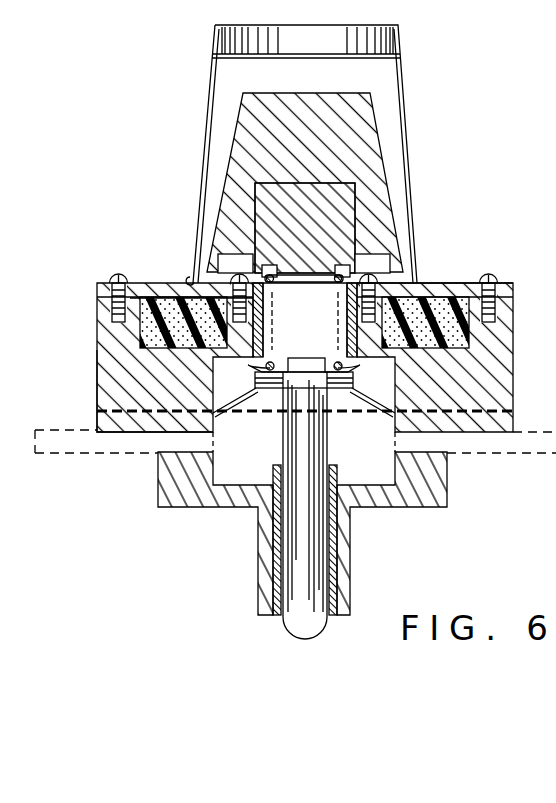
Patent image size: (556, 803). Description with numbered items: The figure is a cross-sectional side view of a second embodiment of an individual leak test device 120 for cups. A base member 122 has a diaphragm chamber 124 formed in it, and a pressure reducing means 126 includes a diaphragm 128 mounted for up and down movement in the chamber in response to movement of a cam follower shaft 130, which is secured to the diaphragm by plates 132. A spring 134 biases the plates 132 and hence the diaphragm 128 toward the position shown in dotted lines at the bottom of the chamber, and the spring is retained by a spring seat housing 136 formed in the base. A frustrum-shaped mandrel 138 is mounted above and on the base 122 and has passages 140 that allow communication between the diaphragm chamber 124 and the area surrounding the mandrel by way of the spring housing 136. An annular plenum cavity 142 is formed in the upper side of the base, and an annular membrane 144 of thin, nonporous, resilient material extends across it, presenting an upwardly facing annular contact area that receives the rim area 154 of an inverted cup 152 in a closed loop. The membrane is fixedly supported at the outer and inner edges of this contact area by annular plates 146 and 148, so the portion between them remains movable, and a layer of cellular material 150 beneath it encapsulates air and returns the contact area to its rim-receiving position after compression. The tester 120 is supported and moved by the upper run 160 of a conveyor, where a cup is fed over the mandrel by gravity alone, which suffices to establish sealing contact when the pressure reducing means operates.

The leak test device 120 is at (127, 172).
The base member 122 is at (97, 341).
The diaphragm chamber 124 is at (97, 362).
The pressure reducing means 126 is at (227, 528).
The diaphragm 128 is at (245, 395).
The cam follower shaft 130 is at (282, 622).
The plates 132 is at (352, 388).
The spring 134 is at (272, 330).
The spring seat housing 136 is at (300, 272).
The frustrum-shaped mandrel 138 is at (382, 147).
The passages 140 is at (236, 262).
The annular plenum cavity 142 is at (108, 290).
The annular membrane 144 is at (158, 298).
The annular plate 146 is at (130, 274).
The annular plate 148 is at (192, 284).
The layer of cellular material 150 is at (140, 318).
The inverted cup 152 is at (207, 75).
The rim area 154 is at (430, 283).
The upper run 160 is at (38, 453).